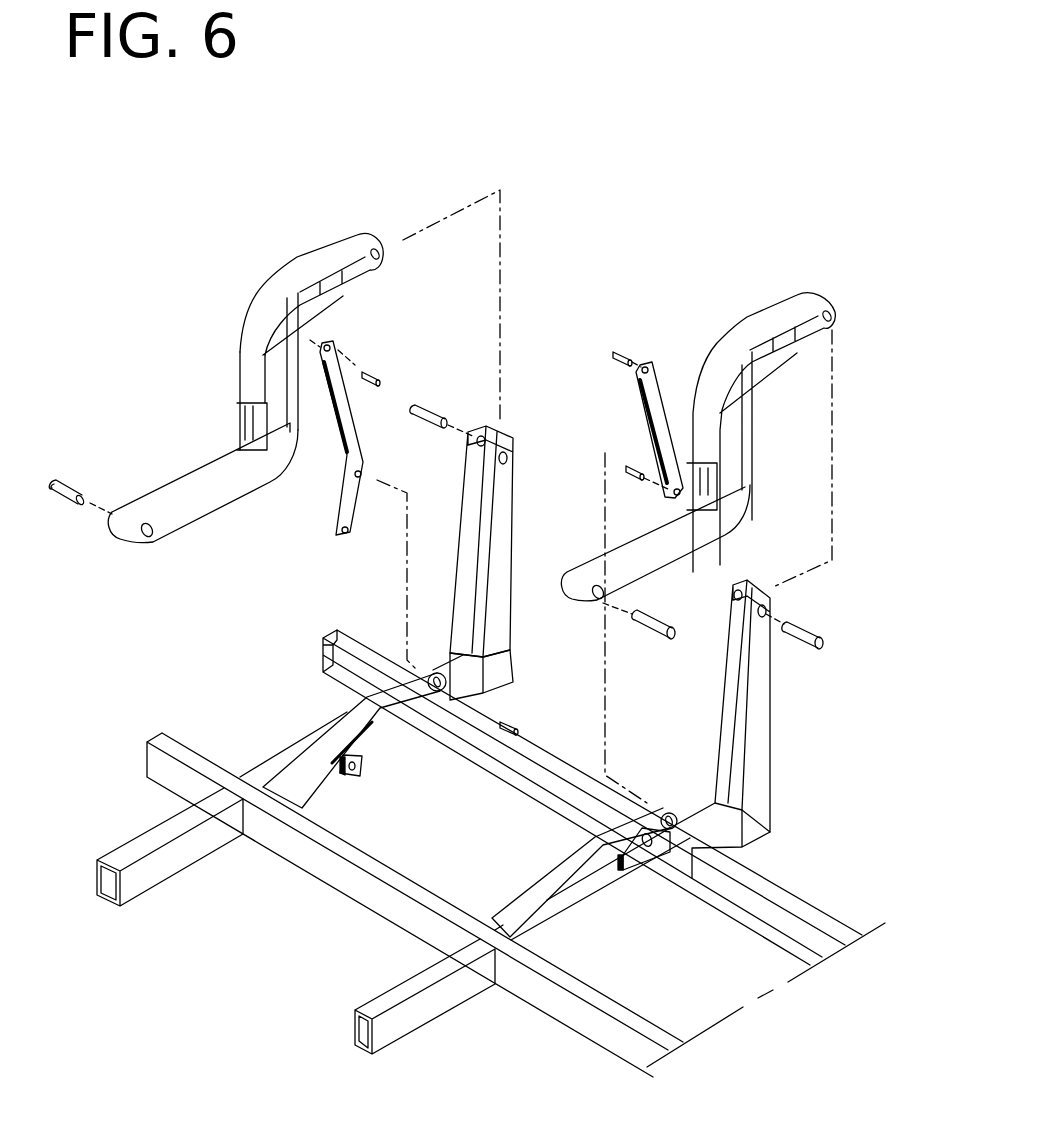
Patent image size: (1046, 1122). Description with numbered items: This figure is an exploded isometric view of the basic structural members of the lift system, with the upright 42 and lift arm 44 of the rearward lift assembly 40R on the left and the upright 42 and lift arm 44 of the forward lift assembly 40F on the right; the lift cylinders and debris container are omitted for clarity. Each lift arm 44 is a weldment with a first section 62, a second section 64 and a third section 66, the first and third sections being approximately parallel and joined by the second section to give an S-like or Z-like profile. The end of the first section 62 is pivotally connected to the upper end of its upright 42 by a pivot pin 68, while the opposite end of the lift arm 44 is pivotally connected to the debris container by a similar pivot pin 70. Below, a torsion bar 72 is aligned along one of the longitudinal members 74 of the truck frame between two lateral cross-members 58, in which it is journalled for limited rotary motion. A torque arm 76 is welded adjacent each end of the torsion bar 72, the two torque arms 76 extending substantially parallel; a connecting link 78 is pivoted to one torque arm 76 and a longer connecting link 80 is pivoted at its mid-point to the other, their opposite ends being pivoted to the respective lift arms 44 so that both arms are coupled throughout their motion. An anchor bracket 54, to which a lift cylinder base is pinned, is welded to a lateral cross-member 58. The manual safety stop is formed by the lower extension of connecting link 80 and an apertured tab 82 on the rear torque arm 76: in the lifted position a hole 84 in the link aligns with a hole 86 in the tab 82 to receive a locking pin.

The rearward lift assembly 40R is at (513, 188).
The forward lift assembly 40F is at (850, 303).
The upright 42 is at (497, 583).
The lift arm 44 is at (450, 399).
The anchor bracket 54 is at (650, 853).
The lateral cross-member 58 is at (185, 845).
The first section 62 is at (358, 222).
The second section 64 is at (223, 293).
The third section 66 is at (280, 466).
The pivot pin 68 is at (433, 400).
The pivot pin 70 is at (93, 500).
The torsion bar 72 is at (400, 858).
The longitudinal member 74 is at (360, 888).
The torque arm 76 is at (345, 712).
The connecting link 78 is at (655, 378).
The connecting link 80 is at (338, 404).
The tab 82 is at (357, 757).
The hole 84 is at (347, 532).
The hole 86 is at (353, 770).